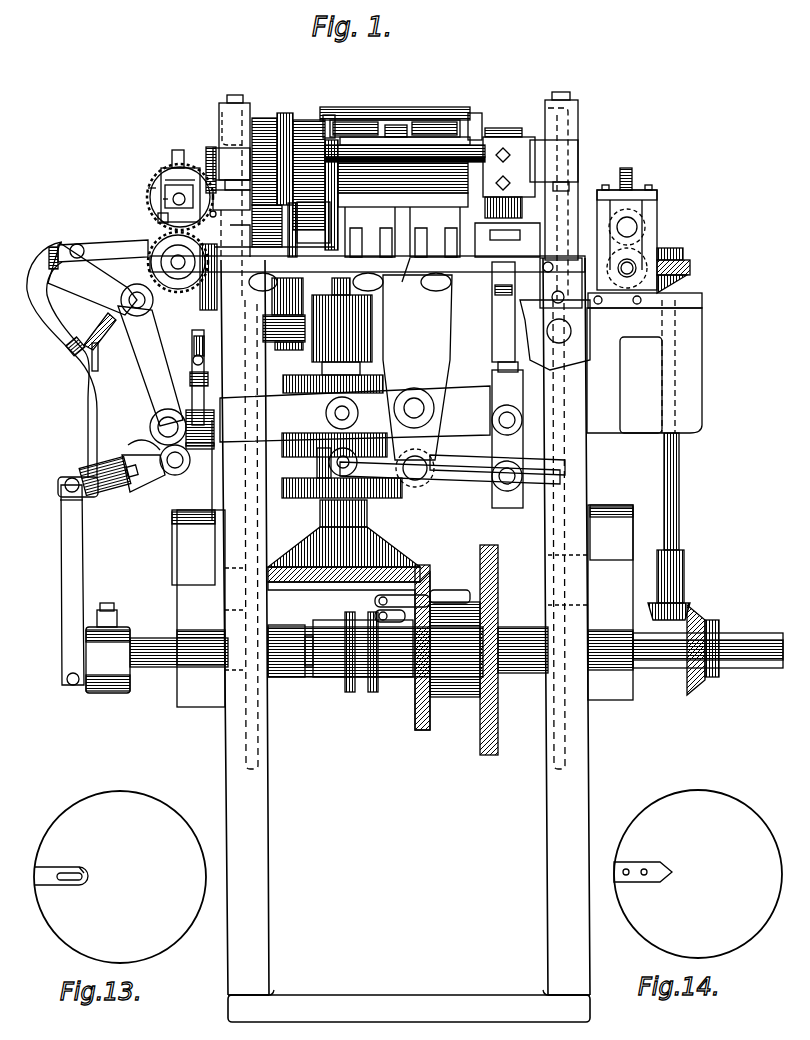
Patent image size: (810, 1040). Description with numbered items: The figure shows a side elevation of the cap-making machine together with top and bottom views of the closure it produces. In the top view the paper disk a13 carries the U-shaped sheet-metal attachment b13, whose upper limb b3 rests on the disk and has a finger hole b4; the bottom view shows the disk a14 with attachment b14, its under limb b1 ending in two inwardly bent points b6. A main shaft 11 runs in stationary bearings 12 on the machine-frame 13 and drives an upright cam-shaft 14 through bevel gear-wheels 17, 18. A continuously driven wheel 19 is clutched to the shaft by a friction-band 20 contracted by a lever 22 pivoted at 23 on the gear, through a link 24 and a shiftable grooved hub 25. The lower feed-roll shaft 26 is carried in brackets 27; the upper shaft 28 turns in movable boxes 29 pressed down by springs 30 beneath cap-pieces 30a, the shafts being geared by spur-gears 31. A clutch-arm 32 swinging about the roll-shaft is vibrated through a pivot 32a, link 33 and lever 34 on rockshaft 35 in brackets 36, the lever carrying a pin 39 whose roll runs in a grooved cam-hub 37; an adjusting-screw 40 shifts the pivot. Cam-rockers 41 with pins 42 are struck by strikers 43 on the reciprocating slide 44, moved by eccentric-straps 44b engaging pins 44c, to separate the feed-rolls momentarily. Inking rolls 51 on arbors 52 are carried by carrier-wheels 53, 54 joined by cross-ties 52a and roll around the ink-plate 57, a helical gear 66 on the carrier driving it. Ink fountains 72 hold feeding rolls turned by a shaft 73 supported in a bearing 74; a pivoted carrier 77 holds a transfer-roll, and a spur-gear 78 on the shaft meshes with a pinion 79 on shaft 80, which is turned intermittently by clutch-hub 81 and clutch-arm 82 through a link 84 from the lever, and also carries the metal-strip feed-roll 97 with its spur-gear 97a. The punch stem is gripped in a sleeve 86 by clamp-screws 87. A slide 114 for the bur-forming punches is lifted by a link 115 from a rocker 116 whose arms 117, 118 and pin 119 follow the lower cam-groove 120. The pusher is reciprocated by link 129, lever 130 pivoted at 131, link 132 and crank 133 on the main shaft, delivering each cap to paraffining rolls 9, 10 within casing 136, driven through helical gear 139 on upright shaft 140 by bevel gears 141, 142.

In FIG. 1, the paraffining roll 9 is at (640, 212).
In FIG. 1, the paraffining roll 10 is at (569, 271).
In FIG. 1, the main shaft 11 is at (156, 672).
In FIG. 1, the stationary bearing 12 is at (285, 680).
In FIG. 1, the machine-frame 13 is at (270, 808).
In FIG. 1, the upright cam-shaft 14 is at (312, 347).
In FIG. 1, the bevel gear-wheel 17 is at (408, 562).
In FIG. 1, the bevel gear-wheel 18 is at (418, 730).
In FIG. 1, the wheel 19 is at (478, 758).
In FIG. 1, the friction-band 20 is at (455, 694).
In FIG. 1, the lever 22 is at (458, 590).
In FIG. 1, the pivot 23 is at (428, 595).
In FIG. 1, the link 24 is at (395, 618).
In FIG. 1, the grooved hub 25 is at (341, 680).
In FIG. 1, the shaft 26 is at (168, 263).
In FIG. 1, the bracket 27 is at (152, 250).
In FIG. 1, the shaft 28 is at (163, 199).
In FIG. 1, the box 29 is at (148, 188).
In FIG. 1, the spring 30 is at (176, 185).
In FIG. 1, the cap-piece 30a is at (172, 183).
In FIG. 1, the spur-gear 31 is at (152, 180).
In FIG. 1, the clutch-arm 32 is at (112, 297).
In FIG. 1, the pivot 32a is at (140, 312).
In FIG. 1, the link 33 is at (138, 378).
In FIG. 1, the lever 34 is at (274, 444).
In FIG. 1, the rockshaft 35 is at (425, 409).
In FIG. 1, the bracket 36 is at (440, 367).
In FIG. 1, the cam-hub 37 is at (280, 386).
In FIG. 1, the pin 39 is at (350, 413).
In FIG. 1, the adjusting-screw 40 is at (98, 350).
In FIG. 1, the cam-rocker 41 is at (158, 218).
In FIG. 1, the pin 42 is at (218, 213).
In FIG. 1, the striker 43 is at (208, 152).
In FIG. 1, the slide 44 is at (236, 185).
In FIG. 1, the eccentric-strap 44b is at (182, 582).
In FIG. 1, the pin 44c is at (182, 552).
In FIG. 1, the inking roll 51 is at (357, 107).
In FIG. 1, the rod 52 is at (400, 125).
In FIG. 1, the cross-tie 52a is at (423, 160).
In FIG. 1, the carrier-wheel 53 is at (478, 113).
In FIG. 1, the carrier-wheel 54 is at (330, 115).
In FIG. 1, the ink-plate 57 is at (388, 120).
In FIG. 1, the helical gear 66 is at (284, 113).
In FIG. 1, the fountain 72 is at (390, 258).
In FIG. 1, the shaft 73 is at (325, 240).
In FIG. 1, the bearing 74 is at (357, 204).
In FIG. 1, the carrier 77 is at (498, 170).
In FIG. 1, the spur-gear 78 is at (296, 216).
In FIG. 1, the pinion 79 is at (270, 292).
In FIG. 1, the shaft 80 is at (406, 286).
In FIG. 1, the clutch-hub 81 is at (196, 330).
In FIG. 1, the clutch-arm 82 is at (190, 346).
In FIG. 1, the link 84 is at (195, 390).
In FIG. 1, the sleeve 86 is at (505, 128).
In FIG. 1, the clamp-screw 87 is at (510, 155).
In FIG. 1, the feed-roll 97 is at (505, 297).
In FIG. 1, the spur-gear 97a is at (495, 292).
In FIG. 1, the slide 114 is at (500, 386).
In FIG. 1, the link 115 is at (500, 438).
In FIG. 1, the rocker 116 is at (415, 480).
In FIG. 1, the arm 117 is at (464, 483).
In FIG. 1, the arm 118 is at (380, 495).
In FIG. 1, the pin 119 is at (358, 462).
In FIG. 1, the cam-groove 120 is at (278, 478).
In FIG. 1, the link 129 is at (103, 243).
In FIG. 1, the lever 130 is at (50, 327).
In FIG. 1, the pivot 131 is at (163, 472).
In FIG. 1, the link 132 is at (62, 562).
In FIG. 1, the crank 133 is at (84, 692).
In FIG. 1, the casing 136 is at (650, 232).
In FIG. 1, the helical gear 139 is at (690, 264).
In FIG. 1, the upright shaft 140 is at (680, 470).
In FIG. 1, the bevel gear 141 is at (690, 604).
In FIG. 1, the bevel gear 142 is at (700, 690).
In FIG. 13, the disk a13 is at (82, 802).
In FIG. 13, the extractor-attachment b13 is at (35, 877).
In FIG. 13, the hole b4 is at (69, 874).
In FIG. 13, the limb b3 is at (85, 871).
In FIG. 14, the disk a14 is at (672, 795).
In FIG. 14, the extractor-attachment b14 is at (613, 873).
In FIG. 14, the limb b1 is at (640, 863).
In FIG. 14, the point b6 is at (662, 867).